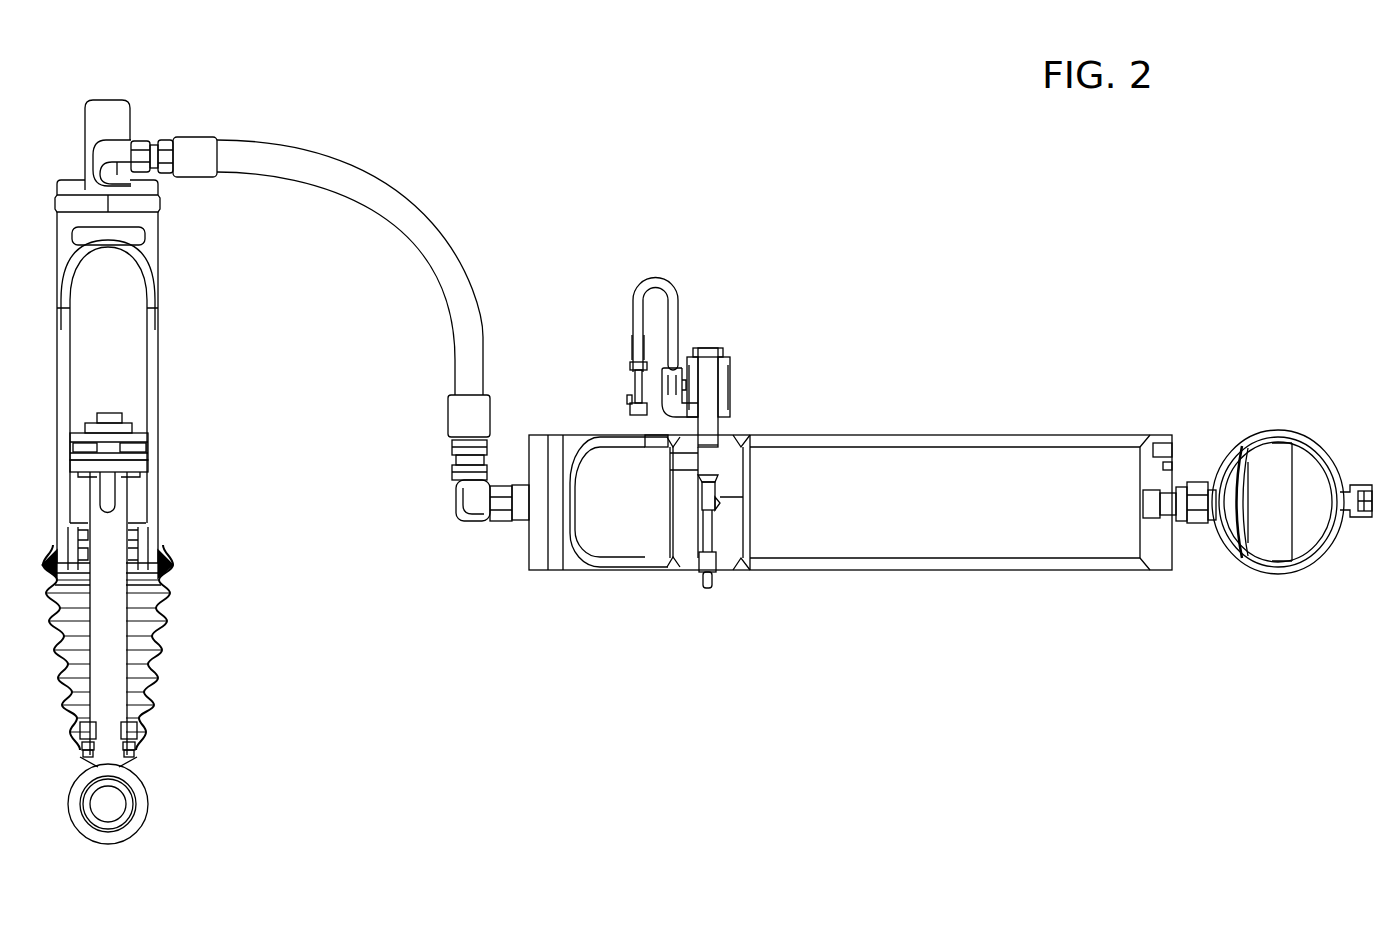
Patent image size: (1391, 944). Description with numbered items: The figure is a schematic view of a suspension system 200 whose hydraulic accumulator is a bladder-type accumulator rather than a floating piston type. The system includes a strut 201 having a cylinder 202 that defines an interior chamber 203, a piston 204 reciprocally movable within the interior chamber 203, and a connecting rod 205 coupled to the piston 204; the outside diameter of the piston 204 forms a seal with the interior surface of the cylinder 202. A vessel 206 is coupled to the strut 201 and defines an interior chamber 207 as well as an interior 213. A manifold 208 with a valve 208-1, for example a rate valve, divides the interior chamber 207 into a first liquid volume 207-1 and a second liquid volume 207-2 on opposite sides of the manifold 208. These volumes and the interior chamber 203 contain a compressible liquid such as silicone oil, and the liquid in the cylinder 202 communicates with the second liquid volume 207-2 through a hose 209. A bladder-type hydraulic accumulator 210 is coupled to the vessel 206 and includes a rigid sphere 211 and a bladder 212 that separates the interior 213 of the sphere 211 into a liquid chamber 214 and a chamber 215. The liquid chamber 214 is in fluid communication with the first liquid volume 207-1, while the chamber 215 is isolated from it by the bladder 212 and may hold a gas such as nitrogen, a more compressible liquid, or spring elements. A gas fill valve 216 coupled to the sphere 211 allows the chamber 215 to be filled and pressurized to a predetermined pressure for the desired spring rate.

The suspension system 200 is at (606, 134).
The strut 201 is at (204, 420).
The cylinder 202 is at (158, 333).
The interior chamber 203 is at (112, 376).
The piston 204 is at (130, 457).
The connecting rod 205 is at (108, 635).
The vessel 206 is at (900, 437).
The interior chamber 207 is at (831, 544).
The first liquid volume 207-1 is at (777, 530).
The second liquid volume 207-2 is at (631, 528).
The manifold 208 is at (728, 440).
The valve 208-1 is at (722, 495).
The hose 209 is at (368, 190).
The bladder-type hydraulic accumulator 210 is at (1270, 392).
The rigid sphere 211 is at (1318, 562).
The bladder 212 is at (1288, 537).
The interior 213 is at (1249, 449).
The liquid chamber 214 is at (1257, 522).
The chamber 215 is at (1302, 470).
The gas fill valve 216 is at (1372, 505).